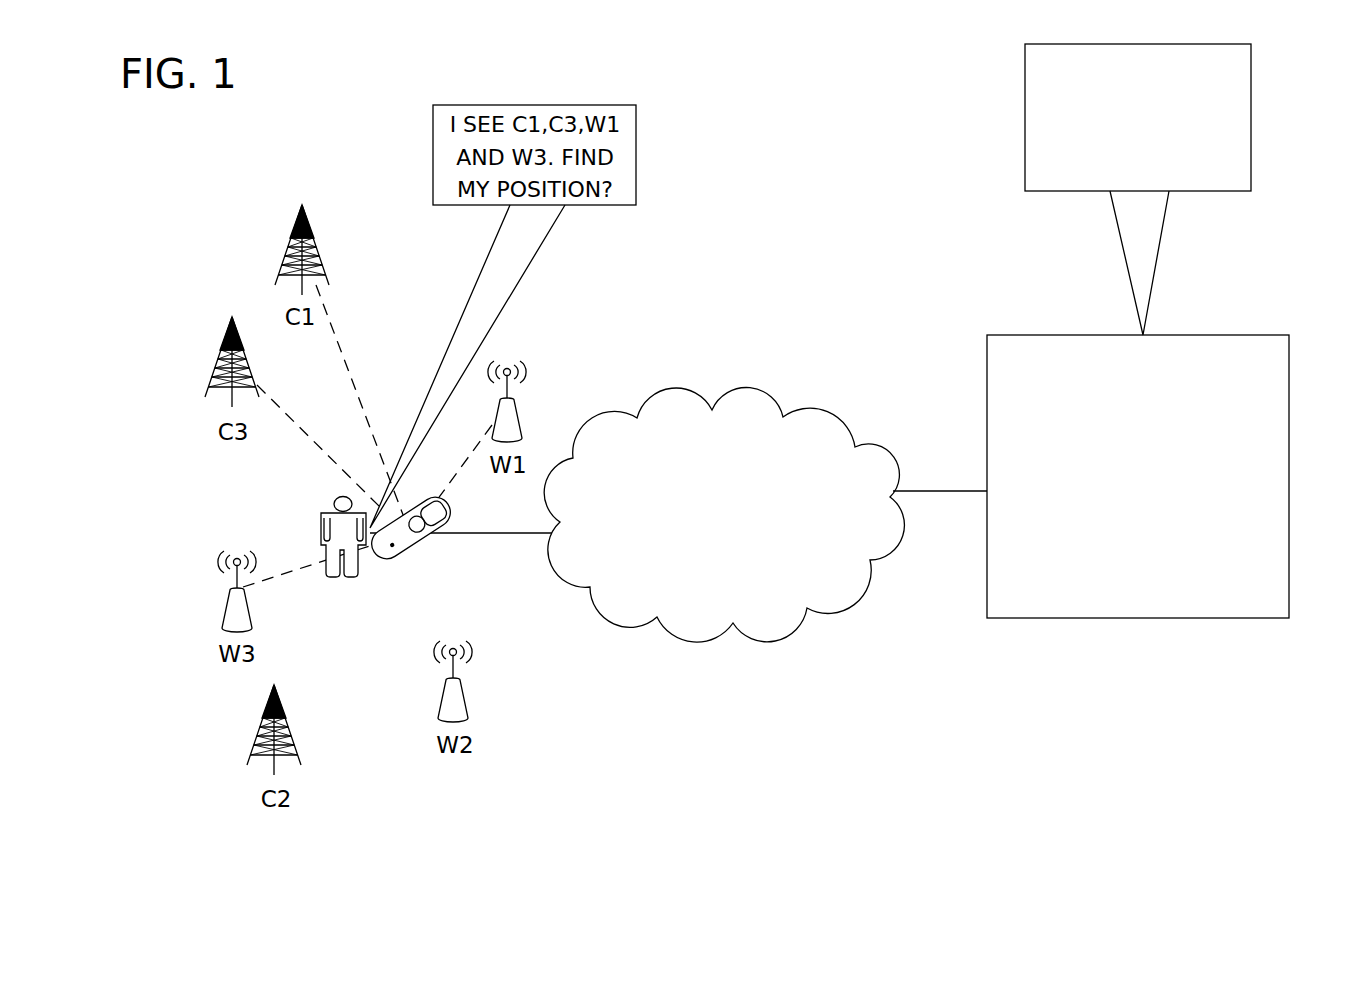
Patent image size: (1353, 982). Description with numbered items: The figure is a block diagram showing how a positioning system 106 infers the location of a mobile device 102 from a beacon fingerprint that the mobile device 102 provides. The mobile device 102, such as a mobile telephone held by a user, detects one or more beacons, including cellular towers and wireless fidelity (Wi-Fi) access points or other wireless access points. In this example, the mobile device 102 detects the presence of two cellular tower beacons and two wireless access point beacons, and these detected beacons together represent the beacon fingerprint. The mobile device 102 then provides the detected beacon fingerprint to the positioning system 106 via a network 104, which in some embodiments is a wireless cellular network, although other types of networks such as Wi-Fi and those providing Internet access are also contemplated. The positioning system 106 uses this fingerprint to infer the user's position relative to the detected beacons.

The mobile device 102 is at (395, 556).
The network 104 is at (746, 397).
The positioning system 106 is at (1213, 335).